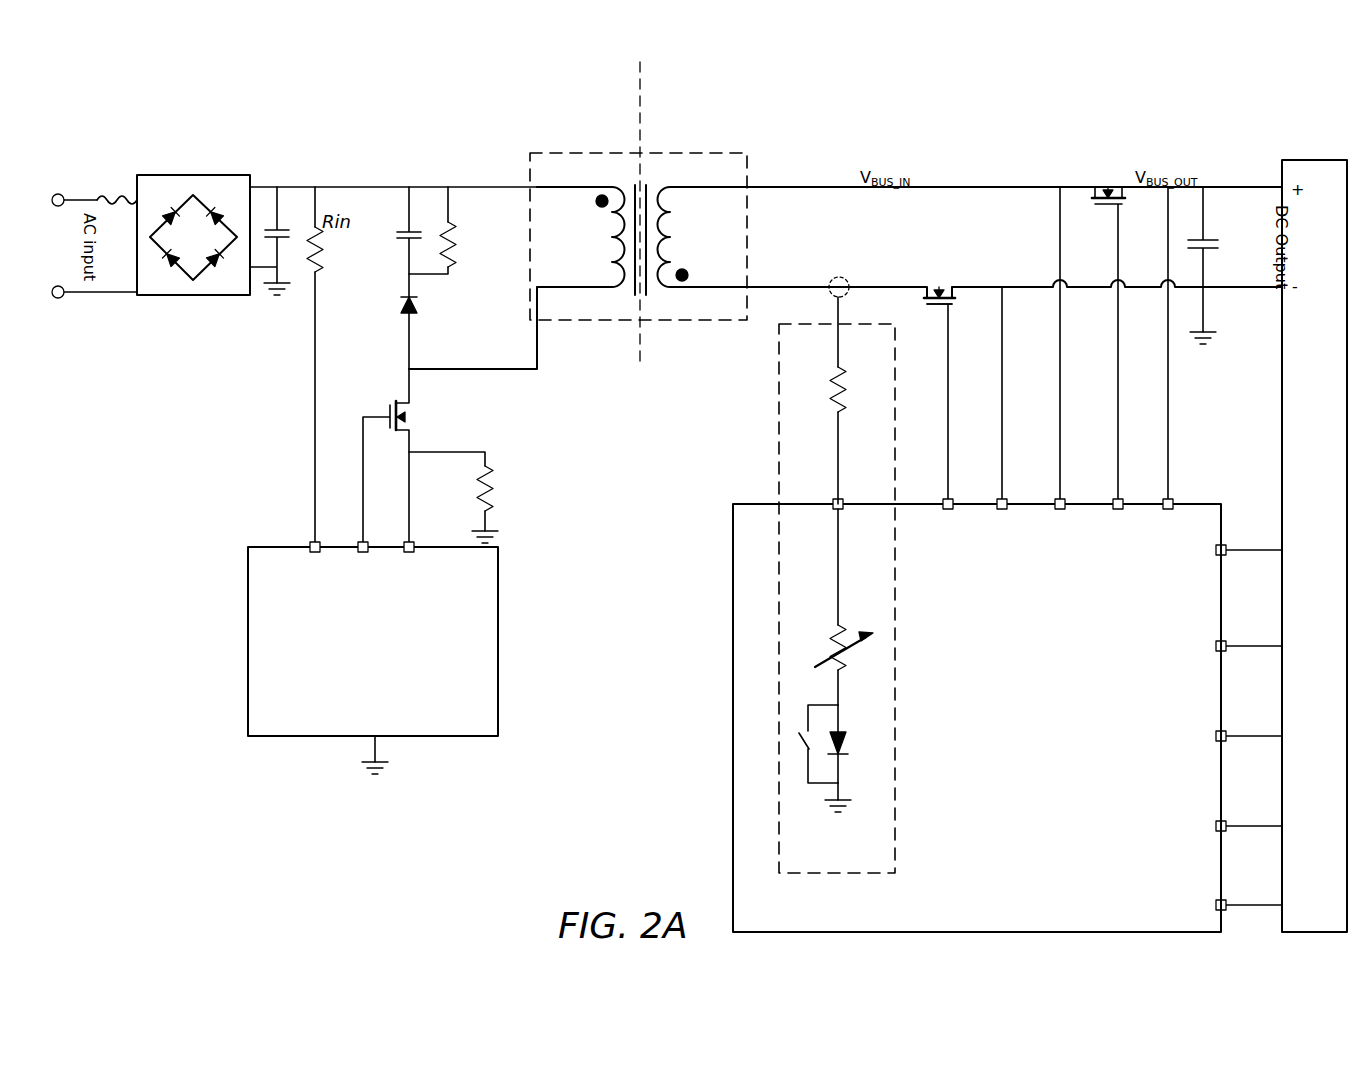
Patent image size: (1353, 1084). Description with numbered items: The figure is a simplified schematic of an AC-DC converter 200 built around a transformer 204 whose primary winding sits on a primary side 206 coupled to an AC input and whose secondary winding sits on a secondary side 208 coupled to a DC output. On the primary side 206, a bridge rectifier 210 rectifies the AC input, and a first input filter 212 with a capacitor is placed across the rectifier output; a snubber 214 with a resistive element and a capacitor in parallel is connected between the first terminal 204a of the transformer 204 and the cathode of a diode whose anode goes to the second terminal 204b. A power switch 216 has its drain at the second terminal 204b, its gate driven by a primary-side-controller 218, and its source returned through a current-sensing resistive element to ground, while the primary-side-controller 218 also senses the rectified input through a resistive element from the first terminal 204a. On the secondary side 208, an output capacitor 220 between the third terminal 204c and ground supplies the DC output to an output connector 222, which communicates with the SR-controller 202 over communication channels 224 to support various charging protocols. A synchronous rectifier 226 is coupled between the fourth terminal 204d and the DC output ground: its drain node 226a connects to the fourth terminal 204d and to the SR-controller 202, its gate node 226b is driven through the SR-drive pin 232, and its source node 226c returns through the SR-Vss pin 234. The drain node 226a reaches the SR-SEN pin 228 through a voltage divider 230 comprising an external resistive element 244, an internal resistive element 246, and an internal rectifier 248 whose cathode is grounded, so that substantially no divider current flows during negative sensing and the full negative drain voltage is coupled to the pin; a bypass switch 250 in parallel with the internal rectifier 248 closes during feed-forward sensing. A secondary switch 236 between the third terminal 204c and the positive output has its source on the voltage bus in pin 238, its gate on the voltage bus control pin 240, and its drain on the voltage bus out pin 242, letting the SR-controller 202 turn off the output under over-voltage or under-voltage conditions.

The AC-DC converter 200 is at (122, 114).
The SR-controller 202 is at (977, 718).
The transformer 204 is at (527, 153).
The first terminal 204a is at (562, 186).
The second terminal 204b is at (576, 293).
The third terminal 204c is at (714, 186).
The fourth terminal 204d is at (716, 293).
The primary side 206 is at (431, 128).
The secondary side 208 is at (976, 128).
The bridge rectifier 210 is at (191, 175).
The first input filter 212 is at (277, 172).
The snubber 214 is at (422, 164).
The power switch 216 is at (378, 401).
The primary-side-controller 218 is at (373, 658).
The output capacitor 220 is at (1212, 236).
The output connector 222 is at (1314, 546).
The communication channels 224 is at (1247, 500).
The synchronous rectifier 226 is at (937, 270).
The drain node 226a is at (842, 274).
The gate node 226b is at (928, 306).
The source node 226c is at (966, 288).
The SR-SEN pin 228 is at (836, 501).
The voltage divider 230 is at (818, 585).
The SR-drive pin 232 is at (946, 501).
The SR-Vss pin 234 is at (1001, 501).
The secondary switch 236 is at (1102, 225).
The voltage bus in pin 238 is at (1060, 501).
The voltage bus control pin 240 is at (1118, 501).
The voltage bus out pin 242 is at (1168, 501).
The external resistive element 244 is at (840, 372).
The internal resistive element 246 is at (828, 671).
The internal rectifier 248 is at (842, 733).
The switch 250 is at (792, 760).